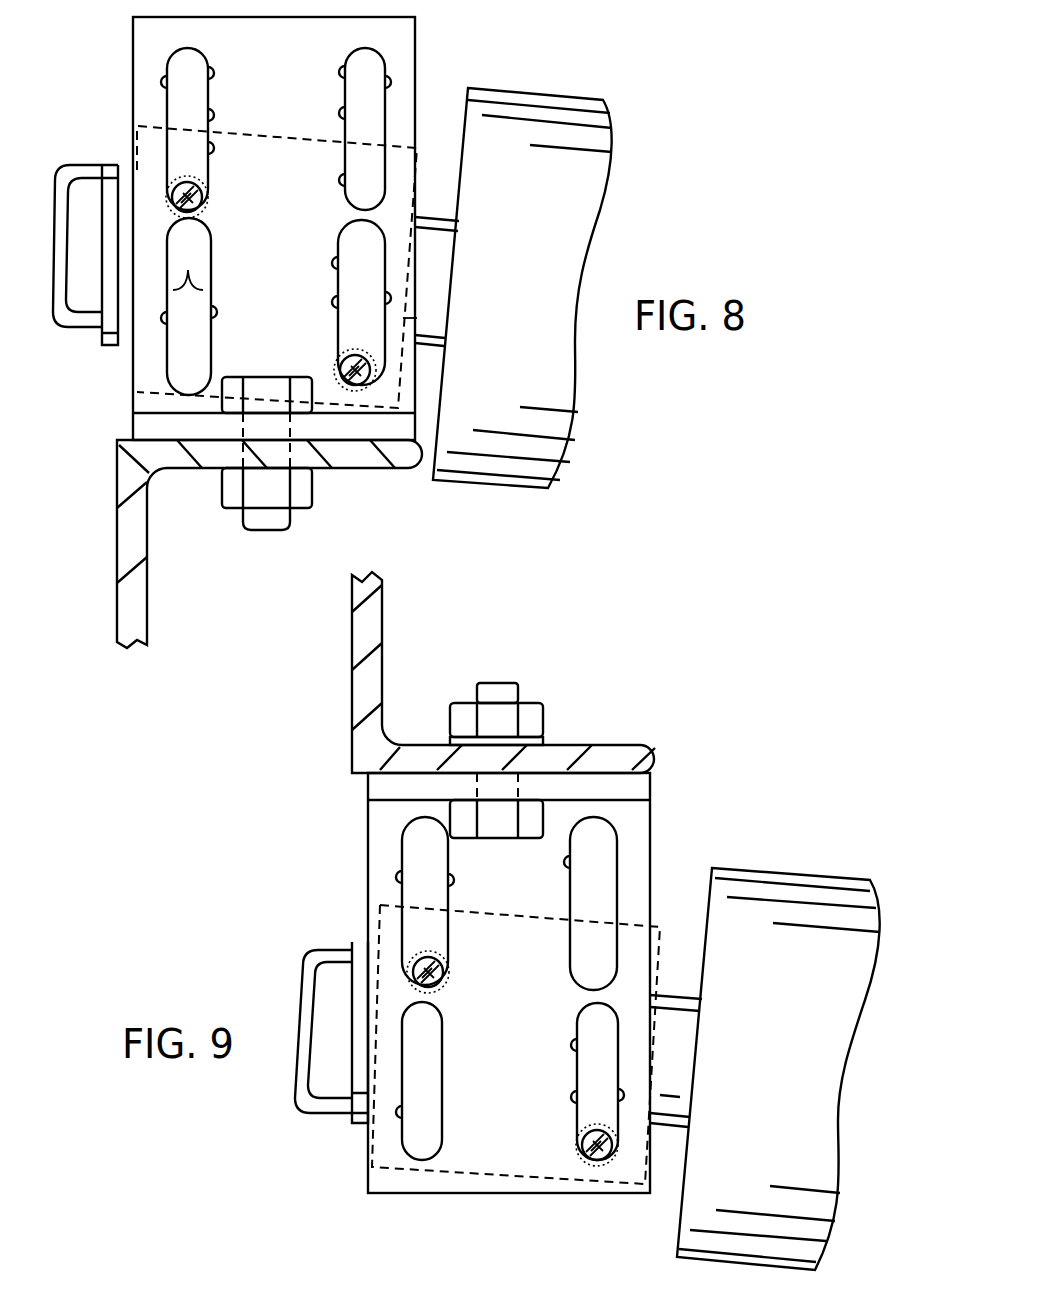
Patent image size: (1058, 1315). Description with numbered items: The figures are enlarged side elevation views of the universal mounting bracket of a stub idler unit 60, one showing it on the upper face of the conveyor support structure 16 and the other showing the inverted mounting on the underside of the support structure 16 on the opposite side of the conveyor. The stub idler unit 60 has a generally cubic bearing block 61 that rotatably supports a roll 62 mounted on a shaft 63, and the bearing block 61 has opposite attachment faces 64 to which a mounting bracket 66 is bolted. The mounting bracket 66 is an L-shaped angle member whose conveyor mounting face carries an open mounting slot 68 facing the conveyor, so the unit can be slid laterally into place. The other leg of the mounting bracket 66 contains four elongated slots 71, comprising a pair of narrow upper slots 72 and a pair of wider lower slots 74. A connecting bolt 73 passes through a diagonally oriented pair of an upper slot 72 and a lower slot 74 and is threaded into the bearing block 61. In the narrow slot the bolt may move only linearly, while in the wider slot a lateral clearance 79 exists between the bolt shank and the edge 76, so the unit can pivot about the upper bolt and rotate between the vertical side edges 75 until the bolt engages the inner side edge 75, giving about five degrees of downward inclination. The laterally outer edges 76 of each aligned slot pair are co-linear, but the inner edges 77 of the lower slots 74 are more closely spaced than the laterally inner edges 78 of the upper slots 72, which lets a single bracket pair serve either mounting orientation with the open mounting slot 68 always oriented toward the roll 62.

In FIG. 8, the conveyor support structure 16 is at (128, 548).
In FIG. 9, the conveyor support structure 16 is at (375, 625).
In FIG. 8, the stub idler unit 60 is at (574, 316).
In FIG. 9, the stub idler unit 60 is at (765, 1030).
In FIG. 8, the bearing block 61 is at (133, 383).
In FIG. 9, the bearing block 61 is at (365, 1165).
In FIG. 8, the roll 62 is at (525, 468).
In FIG. 9, the roll 62 is at (735, 882).
In FIG. 8, the shaft 63 is at (440, 250).
In FIG. 9, the shaft 63 is at (688, 1043).
In FIG. 8, the attachment face 64 is at (127, 362).
In FIG. 9, the attachment face 64 is at (331, 1032).
In FIG. 8, the mounting bracket 66 is at (422, 26).
In FIG. 9, the mounting bracket 66 is at (362, 845).
In FIG. 8, the open mounting slot 68 is at (267, 453).
In FIG. 9, the open mounting slot 68 is at (478, 788).
In FIG. 8, the elongated slots 71 is at (210, 74).
In FIG. 8, the upper slot 72 is at (210, 115).
In FIG. 9, the upper slot 72 is at (580, 1045).
In FIG. 8, the connecting bolt 73 is at (203, 200).
In FIG. 9, the connecting bolt 73 is at (442, 985).
In FIG. 8, the lower slot 74 is at (213, 318).
In FIG. 9, the lower slot 74 is at (448, 883).
In FIG. 8, the vertical side edge 75 is at (187, 263).
In FIG. 8, the laterally outer edge 76 is at (168, 82).
In FIG. 9, the laterally outer edge 76 is at (402, 877).
In FIG. 8, the inner edge of lower slot 77 is at (340, 258).
In FIG. 9, the inner edge of lower slot 77 is at (422, 1081).
In FIG. 8, the laterally inner edge of upper slot 78 is at (210, 148).
In FIG. 8, the lateral clearance 79 is at (418, 316).
In FIG. 9, the lateral clearance 79 is at (410, 950).